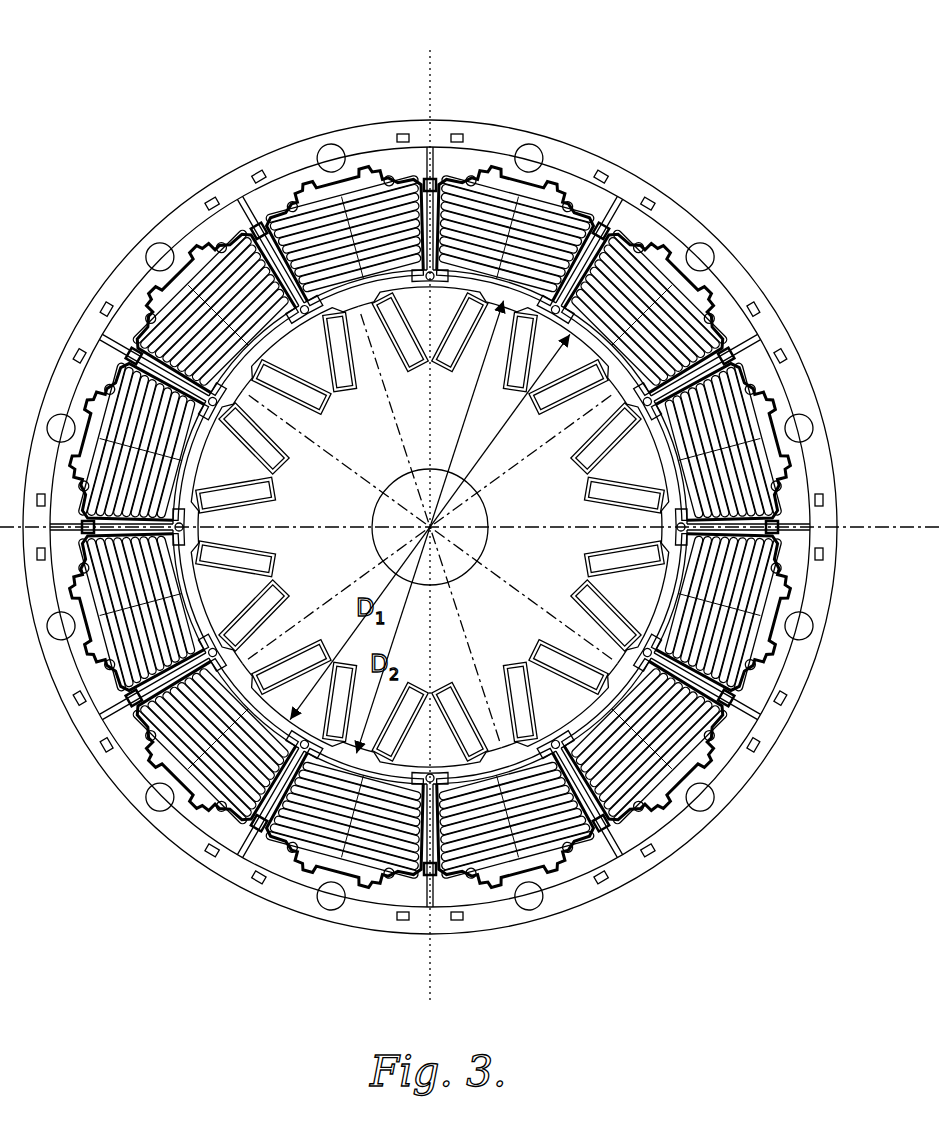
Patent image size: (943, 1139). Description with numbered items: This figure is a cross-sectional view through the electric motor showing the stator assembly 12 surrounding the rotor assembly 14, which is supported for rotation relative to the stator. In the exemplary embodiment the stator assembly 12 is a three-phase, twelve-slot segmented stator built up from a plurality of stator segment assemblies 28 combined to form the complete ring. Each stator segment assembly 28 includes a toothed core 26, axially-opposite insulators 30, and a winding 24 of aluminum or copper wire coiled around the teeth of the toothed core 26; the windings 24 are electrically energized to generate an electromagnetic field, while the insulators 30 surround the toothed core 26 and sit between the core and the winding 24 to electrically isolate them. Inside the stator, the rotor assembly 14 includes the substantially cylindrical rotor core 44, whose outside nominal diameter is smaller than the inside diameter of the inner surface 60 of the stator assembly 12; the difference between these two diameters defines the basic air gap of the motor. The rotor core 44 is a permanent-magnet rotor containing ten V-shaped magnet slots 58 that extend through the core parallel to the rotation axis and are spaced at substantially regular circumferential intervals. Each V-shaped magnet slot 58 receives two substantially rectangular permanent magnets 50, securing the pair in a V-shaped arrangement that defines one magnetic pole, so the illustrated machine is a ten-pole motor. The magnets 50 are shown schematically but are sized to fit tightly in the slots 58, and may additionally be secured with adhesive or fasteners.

The stator assembly 12 is at (430, 469).
The rotor assembly 14 is at (528, 503).
The winding 24 is at (333, 237).
The toothed core 26 is at (398, 128).
The stator segment assembly 28 is at (322, 125).
The insulator 30 is at (305, 195).
The rotor core 44 is at (716, 518).
The permanent magnet 50 is at (600, 603).
The V-shaped magnet slot 58 is at (347, 392).
The inner surface 60 is at (345, 306).